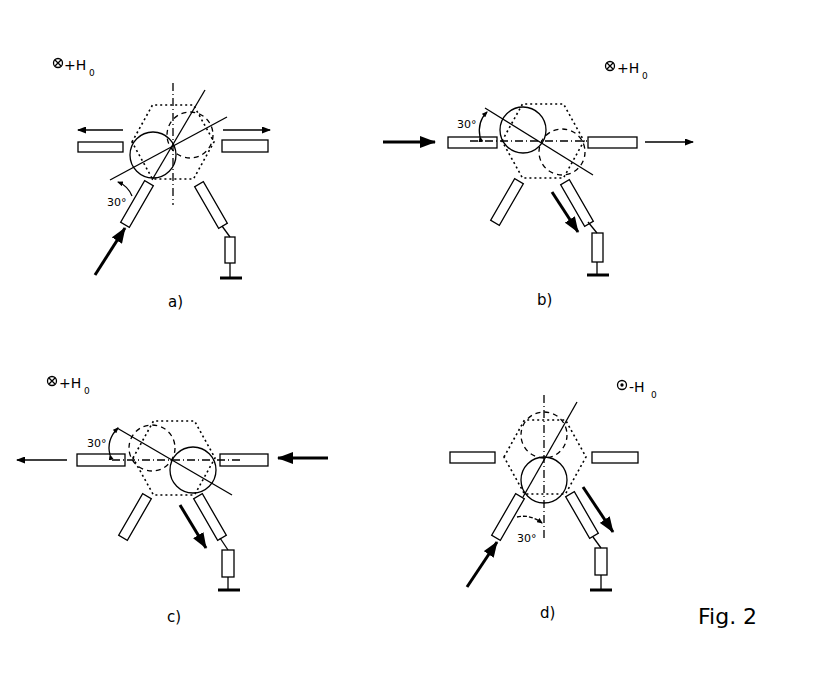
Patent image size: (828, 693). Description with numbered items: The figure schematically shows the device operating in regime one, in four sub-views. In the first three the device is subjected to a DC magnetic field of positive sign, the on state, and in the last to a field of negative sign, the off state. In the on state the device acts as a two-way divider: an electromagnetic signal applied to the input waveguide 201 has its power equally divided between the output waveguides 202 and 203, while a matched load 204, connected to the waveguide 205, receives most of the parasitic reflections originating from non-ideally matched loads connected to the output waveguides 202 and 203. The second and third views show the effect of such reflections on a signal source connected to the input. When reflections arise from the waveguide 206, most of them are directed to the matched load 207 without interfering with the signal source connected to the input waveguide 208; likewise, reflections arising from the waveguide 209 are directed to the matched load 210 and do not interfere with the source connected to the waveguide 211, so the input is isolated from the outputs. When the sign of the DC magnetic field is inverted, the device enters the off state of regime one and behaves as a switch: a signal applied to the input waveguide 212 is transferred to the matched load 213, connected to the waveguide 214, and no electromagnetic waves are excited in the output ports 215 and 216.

The input waveguide 201 is at (115, 218).
The output waveguide 202 is at (93, 157).
The output waveguide 203 is at (252, 157).
The matched load 204 is at (243, 250).
The waveguide 205 is at (197, 215).
The waveguide 206 is at (463, 155).
The matched load 207 is at (613, 247).
The input waveguide 208 is at (490, 223).
The waveguide 209 is at (257, 448).
The matched load 210 is at (240, 562).
The waveguide 211 is at (115, 528).
The input waveguide 212 is at (495, 522).
The matched load 213 is at (613, 562).
The waveguide 214 is at (573, 532).
The output port 215 is at (467, 447).
The output port 216 is at (625, 447).